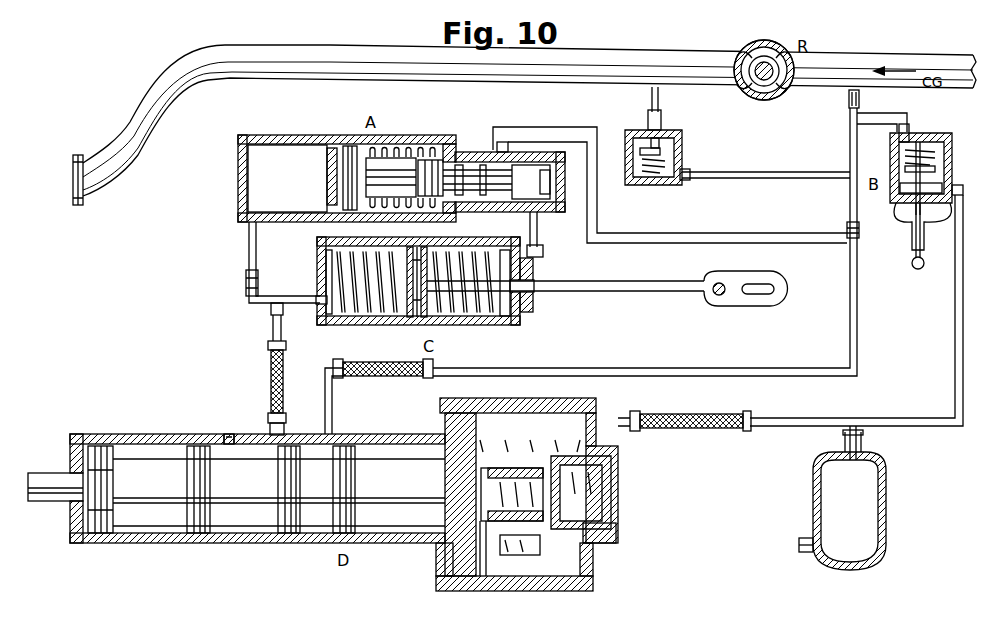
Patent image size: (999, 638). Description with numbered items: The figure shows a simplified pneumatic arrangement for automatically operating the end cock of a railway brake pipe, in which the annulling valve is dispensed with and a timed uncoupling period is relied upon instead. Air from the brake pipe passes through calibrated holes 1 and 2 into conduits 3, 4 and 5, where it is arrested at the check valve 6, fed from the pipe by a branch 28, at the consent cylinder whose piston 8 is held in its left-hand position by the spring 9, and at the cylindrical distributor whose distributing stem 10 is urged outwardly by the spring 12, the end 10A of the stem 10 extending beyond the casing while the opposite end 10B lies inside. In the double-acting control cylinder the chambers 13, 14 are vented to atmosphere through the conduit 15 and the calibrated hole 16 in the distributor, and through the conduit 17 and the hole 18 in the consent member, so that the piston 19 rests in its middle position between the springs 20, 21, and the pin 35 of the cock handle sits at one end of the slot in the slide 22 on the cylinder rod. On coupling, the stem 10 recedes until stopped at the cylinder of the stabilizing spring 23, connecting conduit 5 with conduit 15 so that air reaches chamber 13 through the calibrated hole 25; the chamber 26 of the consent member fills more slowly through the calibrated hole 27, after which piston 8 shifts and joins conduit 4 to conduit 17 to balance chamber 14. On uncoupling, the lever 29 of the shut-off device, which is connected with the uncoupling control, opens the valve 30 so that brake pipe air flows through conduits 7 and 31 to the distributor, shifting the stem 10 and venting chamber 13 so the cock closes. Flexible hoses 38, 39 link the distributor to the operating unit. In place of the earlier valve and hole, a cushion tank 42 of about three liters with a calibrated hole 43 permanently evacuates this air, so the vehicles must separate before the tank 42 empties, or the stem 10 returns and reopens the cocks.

The calibrated hole 1 is at (844, 97).
The calibrated hole 2 is at (846, 230).
The conduit 3 is at (784, 168).
The conduit 4 is at (548, 127).
The conduit 5 is at (848, 143).
The check valve 6 is at (684, 154).
The conduit 7 is at (884, 114).
The piston 8 is at (400, 160).
The spring 9 is at (435, 160).
The distributing stem 10 is at (287, 498).
The end of stem 10A is at (58, 473).
The end of stem 10B is at (470, 556).
The spring 12 is at (542, 562).
The chamber 13 is at (377, 316).
The chamber 14 is at (485, 318).
The conduit 15 is at (284, 334).
The calibrated hole 16 is at (232, 428).
The conduit 17 is at (540, 244).
The hole 18 is at (562, 184).
The piston 19 is at (410, 318).
The spring 20 is at (342, 320).
The spring 21 is at (500, 326).
The slide 22 is at (755, 306).
The stabilizing spring 23 is at (516, 578).
The calibrated hole 25 is at (263, 316).
The chamber 26 is at (257, 180).
The calibrated hole 27 is at (238, 287).
The inlet line 28 is at (661, 105).
The valve handle 29 is at (924, 247).
The valve 30 is at (951, 150).
The conduit 31 is at (906, 430).
The pin 35 is at (716, 294).
The hose 38 is at (283, 396).
The hose 39 is at (386, 377).
The cushion tank 42 is at (849, 498).
The calibrated hole 43 is at (798, 545).